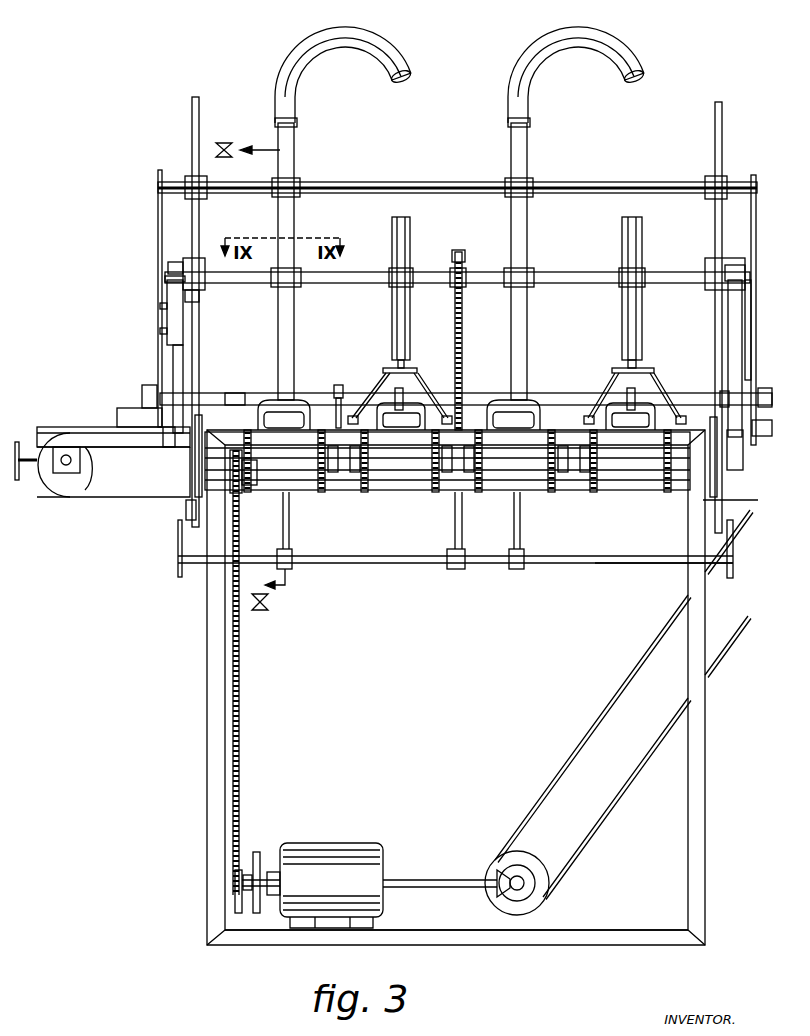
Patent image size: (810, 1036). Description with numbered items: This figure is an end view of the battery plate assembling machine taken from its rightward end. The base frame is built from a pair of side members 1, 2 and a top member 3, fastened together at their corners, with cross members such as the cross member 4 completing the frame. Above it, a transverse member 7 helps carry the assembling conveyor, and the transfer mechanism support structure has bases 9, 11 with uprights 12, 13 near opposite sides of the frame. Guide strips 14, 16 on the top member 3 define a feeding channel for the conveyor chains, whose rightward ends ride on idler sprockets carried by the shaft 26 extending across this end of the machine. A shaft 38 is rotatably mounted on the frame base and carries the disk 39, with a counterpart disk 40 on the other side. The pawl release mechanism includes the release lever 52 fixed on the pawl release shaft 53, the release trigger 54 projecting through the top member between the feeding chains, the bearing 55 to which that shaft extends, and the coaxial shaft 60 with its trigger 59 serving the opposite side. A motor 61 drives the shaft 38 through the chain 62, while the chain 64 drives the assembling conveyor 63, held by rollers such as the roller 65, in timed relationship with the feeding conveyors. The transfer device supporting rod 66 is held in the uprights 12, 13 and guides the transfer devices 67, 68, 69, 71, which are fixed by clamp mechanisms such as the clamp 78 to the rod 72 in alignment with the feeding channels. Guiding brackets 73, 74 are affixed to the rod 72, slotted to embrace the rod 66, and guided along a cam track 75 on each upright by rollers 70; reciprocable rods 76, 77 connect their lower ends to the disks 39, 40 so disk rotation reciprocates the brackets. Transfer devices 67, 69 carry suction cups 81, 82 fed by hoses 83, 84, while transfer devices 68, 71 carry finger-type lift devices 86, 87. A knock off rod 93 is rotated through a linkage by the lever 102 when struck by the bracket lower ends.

The side member 1 is at (712, 790).
The side member 2 is at (206, 722).
The top member 3 is at (692, 428).
The cross member 4 is at (585, 935).
The transverse member 7 is at (57, 432).
The transfer mechanism base 9 is at (136, 408).
The transfer mechanism base 11 is at (767, 432).
The upright 12 is at (158, 200).
The upright 13 is at (757, 185).
The guide strip 14 is at (332, 392).
The guide strip 16 is at (240, 400).
The shaft 26 is at (310, 480).
The shaft 38 is at (400, 493).
The disk 39 is at (188, 476).
The counterpart disk 40 is at (727, 488).
The release lever 52 is at (178, 550).
The pawl release shaft 53 is at (352, 558).
The release trigger 54 is at (287, 550).
The bearing 55 is at (458, 566).
The trigger 59 is at (522, 530).
The shaft 60 is at (593, 557).
The motor 61 is at (352, 845).
The chain 62 is at (240, 812).
The assembling conveyor 63 is at (63, 427).
The chain 64 is at (575, 750).
The assembling conveyor roller 65 is at (62, 480).
The transfer device supporting rod 66 is at (402, 186).
The transfer device 67 is at (290, 139).
The transfer device 68 is at (404, 238).
The transfer device 69 is at (520, 148).
The roller 70 is at (170, 268).
The transfer device 71 is at (634, 253).
The rod 72 is at (357, 276).
The guiding bracket 73 is at (197, 122).
The guiding bracket 74 is at (713, 120).
The cam track 75 is at (168, 312).
The reciprocable rod 76 is at (178, 335).
The reciprocable rod 77 is at (737, 325).
The clamp mechanism 78 is at (303, 283).
The suction cup 81 is at (305, 403).
The suction cup 82 is at (540, 398).
The hose 83 is at (352, 35).
The hose 84 is at (585, 40).
The finger-type lift device 86 is at (415, 390).
The finger-type lift device 87 is at (652, 390).
The knock off rod 93 is at (556, 397).
The lever 102 is at (192, 297).